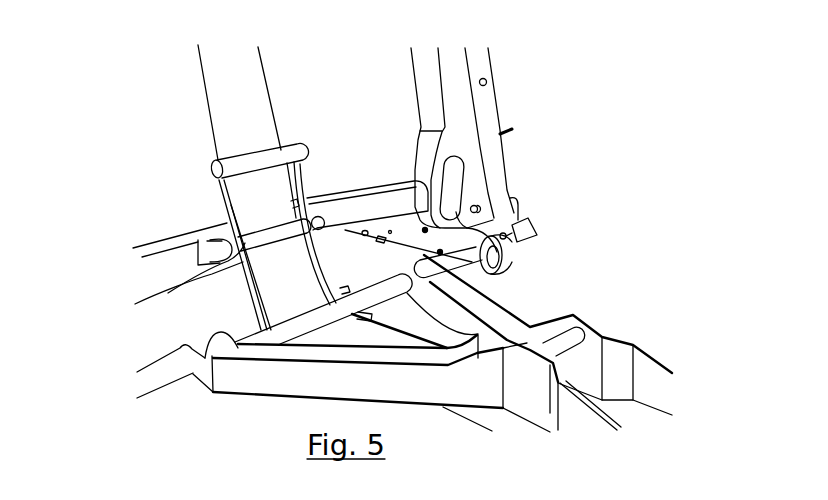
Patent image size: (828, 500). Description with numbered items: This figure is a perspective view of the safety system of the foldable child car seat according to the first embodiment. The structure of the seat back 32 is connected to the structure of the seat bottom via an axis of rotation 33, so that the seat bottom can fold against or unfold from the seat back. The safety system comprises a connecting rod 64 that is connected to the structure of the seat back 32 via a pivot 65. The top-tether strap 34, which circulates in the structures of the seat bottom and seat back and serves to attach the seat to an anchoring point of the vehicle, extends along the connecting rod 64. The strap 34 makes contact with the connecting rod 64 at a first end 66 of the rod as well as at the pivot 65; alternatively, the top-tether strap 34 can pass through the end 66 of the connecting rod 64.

The structure of the seat back 32 is at (528, 90).
The axis of rotation 33 is at (152, 377).
The top-tether strap 34 is at (233, 78).
The connecting rod 64 is at (196, 203).
The pivot 65 is at (170, 292).
The first end of the connecting rod 66 is at (195, 165).